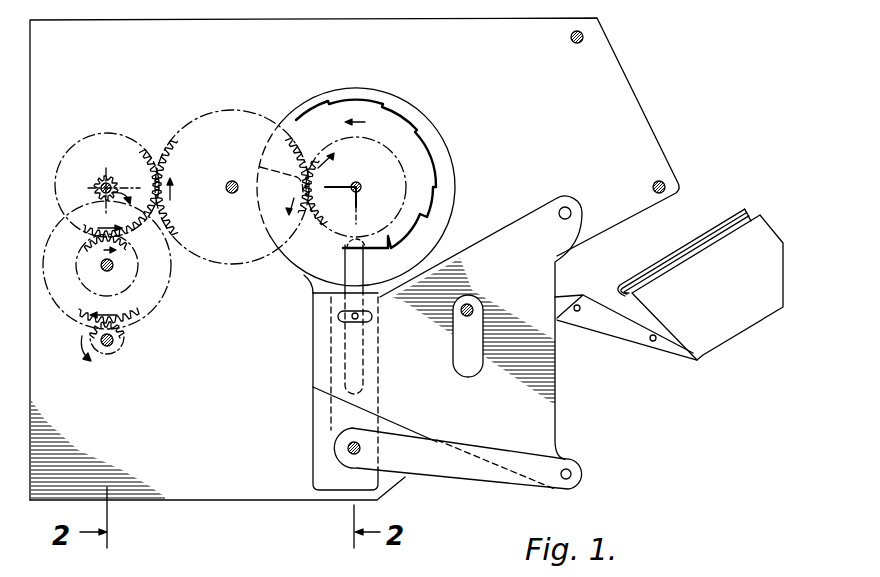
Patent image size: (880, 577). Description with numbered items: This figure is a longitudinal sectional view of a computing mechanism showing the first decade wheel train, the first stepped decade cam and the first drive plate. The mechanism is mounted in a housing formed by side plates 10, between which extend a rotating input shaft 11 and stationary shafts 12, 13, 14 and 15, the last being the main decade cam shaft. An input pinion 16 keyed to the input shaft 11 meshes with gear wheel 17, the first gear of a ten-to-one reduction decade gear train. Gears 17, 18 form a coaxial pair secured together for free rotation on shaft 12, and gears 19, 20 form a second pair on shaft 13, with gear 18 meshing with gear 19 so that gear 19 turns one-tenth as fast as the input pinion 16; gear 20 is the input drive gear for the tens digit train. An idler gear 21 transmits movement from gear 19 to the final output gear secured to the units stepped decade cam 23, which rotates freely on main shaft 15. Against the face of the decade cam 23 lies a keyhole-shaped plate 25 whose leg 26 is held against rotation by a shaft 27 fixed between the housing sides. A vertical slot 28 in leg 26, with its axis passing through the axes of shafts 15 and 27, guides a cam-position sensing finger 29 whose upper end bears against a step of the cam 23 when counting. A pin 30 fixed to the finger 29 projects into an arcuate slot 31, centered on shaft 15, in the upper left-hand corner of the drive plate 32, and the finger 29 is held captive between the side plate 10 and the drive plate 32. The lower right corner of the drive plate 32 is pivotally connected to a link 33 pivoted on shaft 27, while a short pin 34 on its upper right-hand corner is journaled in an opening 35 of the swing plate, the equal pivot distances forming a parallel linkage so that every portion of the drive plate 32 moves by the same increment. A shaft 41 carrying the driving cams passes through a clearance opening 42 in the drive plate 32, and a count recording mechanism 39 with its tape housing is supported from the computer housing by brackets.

The side plate 10 is at (180, 492).
The rotating input shaft 11 is at (114, 340).
The stationary shaft 12 is at (111, 268).
The stationary shaft 13 is at (102, 184).
The stationary shaft 14 is at (229, 184).
The main decade cam shaft 15 is at (358, 185).
The input pinion 16 is at (107, 350).
The gear wheel 17 is at (162, 275).
The gear wheel 18 is at (127, 265).
The gear wheel 19 is at (127, 143).
The gear wheel 20 is at (128, 206).
The idler gear 21 is at (231, 113).
The stepped decade cam 23 is at (417, 129).
The keyhole-shaped plate 25 is at (456, 172).
The leg 26 is at (330, 420).
The shaft 27 is at (348, 448).
The slot 28 is at (345, 262).
The cam-position sensing finger 29 is at (350, 332).
The pin 30 is at (340, 318).
The arcuate slot 31 is at (373, 320).
The drive plate 32 is at (556, 385).
The link 33 is at (447, 468).
The pin 34 is at (571, 213).
The opening 35 is at (562, 220).
The count recording mechanism 39 is at (738, 203).
The shaft 41 is at (475, 308).
The clearance opening 42 is at (455, 352).